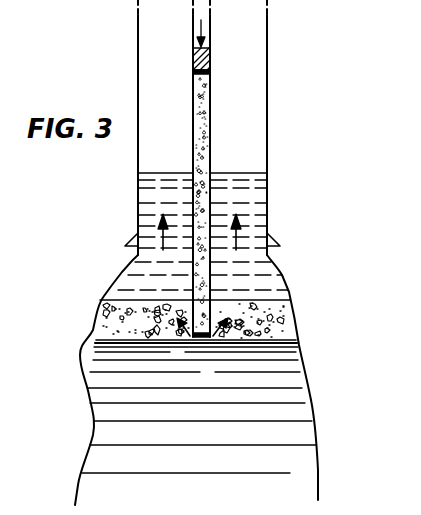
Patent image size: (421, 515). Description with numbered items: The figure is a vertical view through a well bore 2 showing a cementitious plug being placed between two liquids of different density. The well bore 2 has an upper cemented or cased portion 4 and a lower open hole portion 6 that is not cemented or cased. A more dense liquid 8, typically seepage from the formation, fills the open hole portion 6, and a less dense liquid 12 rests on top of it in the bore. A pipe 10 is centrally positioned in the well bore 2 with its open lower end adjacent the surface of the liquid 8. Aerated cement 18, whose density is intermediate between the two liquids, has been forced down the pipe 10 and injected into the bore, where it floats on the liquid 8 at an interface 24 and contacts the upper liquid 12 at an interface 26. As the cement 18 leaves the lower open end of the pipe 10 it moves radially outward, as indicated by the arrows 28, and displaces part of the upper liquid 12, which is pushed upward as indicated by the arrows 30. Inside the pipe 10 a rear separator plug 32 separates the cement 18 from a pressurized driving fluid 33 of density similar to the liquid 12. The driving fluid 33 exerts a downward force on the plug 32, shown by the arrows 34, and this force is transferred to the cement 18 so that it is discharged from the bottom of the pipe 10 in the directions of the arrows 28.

The well bore 2 is at (202, 252).
The cemented or cased portion 4 is at (267, 97).
The open hole portion 6 is at (300, 357).
The liquid 8 is at (290, 405).
The pipe 10 is at (275, 180).
The liquid 12 is at (250, 203).
The aerated cement 18 is at (193, 124).
The interface 24 is at (120, 334).
The interface 26 is at (272, 283).
The arrows 28 is at (178, 336).
The arrows 30 is at (232, 240).
The rear separator plug 32 is at (212, 58).
The pressurized driving fluid 33 is at (205, 23).
The arrows 34 is at (192, 24).